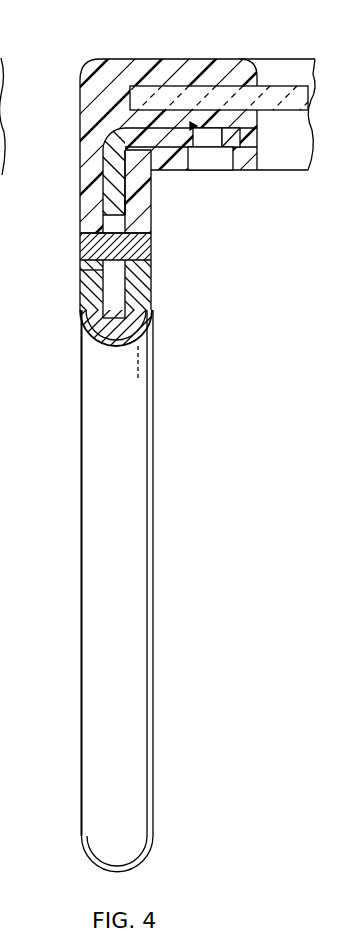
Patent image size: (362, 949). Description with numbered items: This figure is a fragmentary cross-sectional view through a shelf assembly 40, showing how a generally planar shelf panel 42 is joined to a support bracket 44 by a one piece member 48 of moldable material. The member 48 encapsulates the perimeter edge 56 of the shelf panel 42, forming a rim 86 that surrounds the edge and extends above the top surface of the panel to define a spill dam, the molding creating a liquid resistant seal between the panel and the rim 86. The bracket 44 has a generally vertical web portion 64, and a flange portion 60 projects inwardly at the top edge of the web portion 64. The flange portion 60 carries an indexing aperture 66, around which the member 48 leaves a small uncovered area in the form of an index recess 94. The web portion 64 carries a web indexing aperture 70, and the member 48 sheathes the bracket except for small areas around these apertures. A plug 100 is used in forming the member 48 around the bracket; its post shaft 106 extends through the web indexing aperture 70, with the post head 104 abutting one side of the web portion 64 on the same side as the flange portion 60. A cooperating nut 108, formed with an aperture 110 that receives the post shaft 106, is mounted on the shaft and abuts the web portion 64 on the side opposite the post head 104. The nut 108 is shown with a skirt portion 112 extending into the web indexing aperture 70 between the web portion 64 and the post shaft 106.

The shelf assembly 40 is at (243, 615).
The shelf panel 42 is at (301, 92).
The support bracket 44 is at (132, 342).
The one piece member 48 is at (144, 527).
The perimeter edge 56 is at (119, 98).
The flange portion 60 is at (160, 140).
The web portion 64 is at (112, 152).
The indexing aperture 66 is at (215, 137).
The web indexing aperture 70 is at (147, 309).
The rim 86 is at (182, 62).
The index recess 94 is at (206, 164).
The plug 100 is at (181, 250).
The post head 104 is at (144, 269).
The post shaft 106 is at (80, 244).
The nut 108 is at (90, 270).
The aperture 110 is at (80, 259).
The skirt portion 112 is at (127, 205).